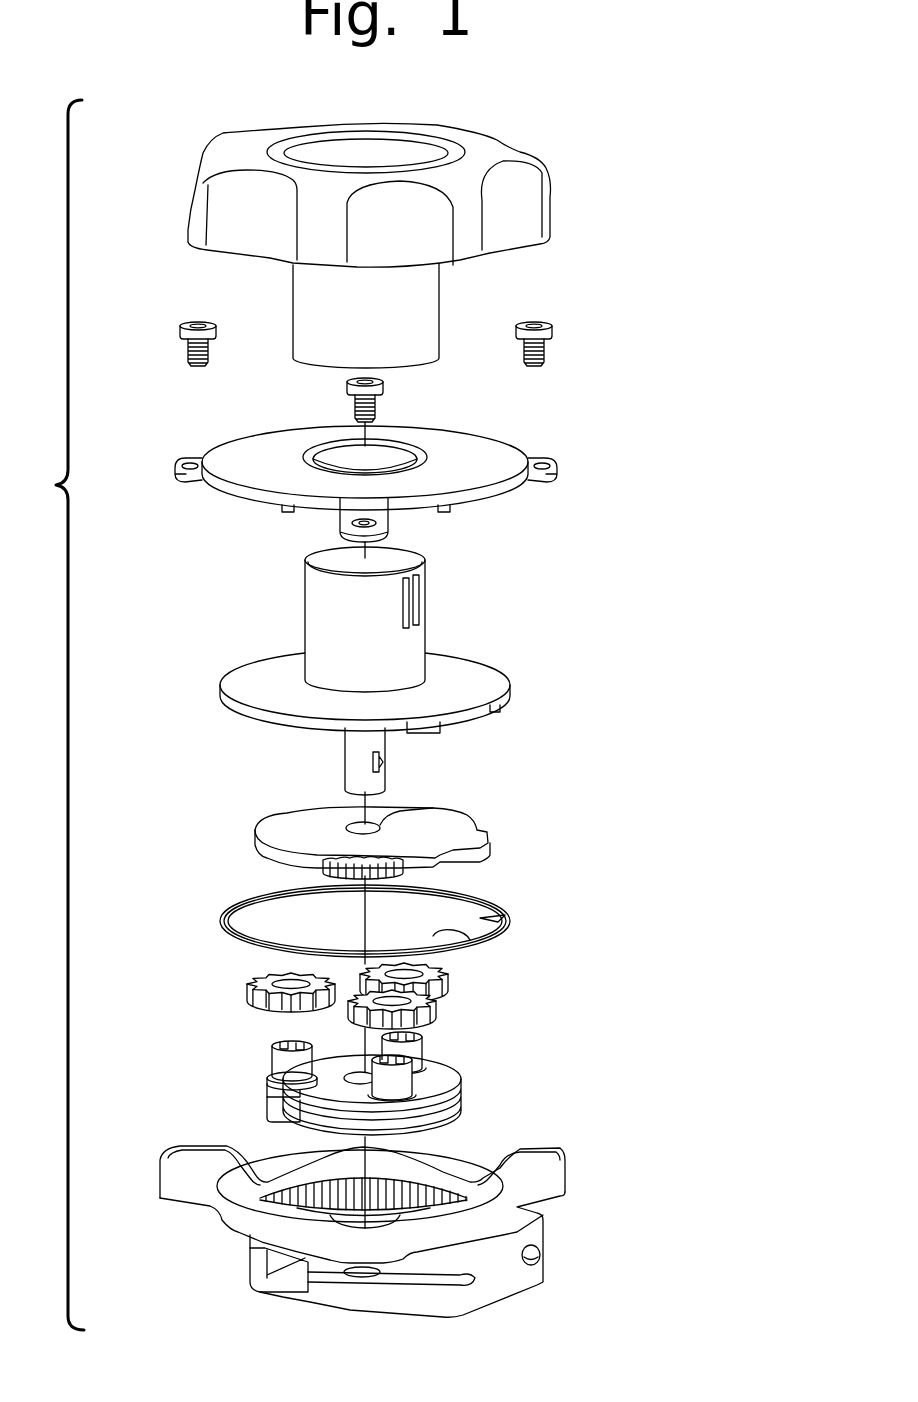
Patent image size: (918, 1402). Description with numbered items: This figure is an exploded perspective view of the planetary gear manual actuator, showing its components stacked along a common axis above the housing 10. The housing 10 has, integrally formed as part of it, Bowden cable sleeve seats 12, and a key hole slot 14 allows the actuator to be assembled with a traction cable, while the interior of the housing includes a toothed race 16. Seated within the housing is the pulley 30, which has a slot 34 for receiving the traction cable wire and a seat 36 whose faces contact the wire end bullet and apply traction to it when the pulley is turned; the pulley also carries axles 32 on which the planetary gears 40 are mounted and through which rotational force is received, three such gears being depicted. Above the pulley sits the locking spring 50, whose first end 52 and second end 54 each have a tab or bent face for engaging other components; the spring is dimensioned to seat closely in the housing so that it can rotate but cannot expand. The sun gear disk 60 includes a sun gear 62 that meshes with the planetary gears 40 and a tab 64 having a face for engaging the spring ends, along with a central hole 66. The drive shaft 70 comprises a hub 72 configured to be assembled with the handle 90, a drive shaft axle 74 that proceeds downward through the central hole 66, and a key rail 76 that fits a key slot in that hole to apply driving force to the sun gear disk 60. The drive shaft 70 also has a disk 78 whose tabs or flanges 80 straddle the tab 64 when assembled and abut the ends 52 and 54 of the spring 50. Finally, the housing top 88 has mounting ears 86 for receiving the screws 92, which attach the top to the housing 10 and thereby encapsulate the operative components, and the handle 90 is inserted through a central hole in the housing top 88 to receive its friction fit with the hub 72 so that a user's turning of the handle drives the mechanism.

The housing 10 is at (419, 1212).
The Bowden cable sleeve seats 12 is at (551, 1244).
The key hole slot 14 is at (242, 1268).
The toothed race 16 is at (458, 1194).
The pulley 30 is at (363, 1083).
The axles 32 is at (272, 1050).
The slot 34 is at (261, 1090).
The seat 36 is at (293, 1115).
The planetary gears 40 is at (448, 983).
The locking spring 50 is at (369, 921).
The first end 52 is at (496, 913).
The second end 54 is at (472, 931).
The sun gear disk 60 is at (389, 836).
The sun gear 62 is at (322, 866).
The tab 64 is at (472, 860).
The central hole 66 is at (400, 819).
The drive shaft 70 is at (359, 670).
The hub 72 is at (305, 585).
The drive shaft axle 74 is at (345, 745).
The key rail 76 is at (385, 757).
The disk 78 is at (495, 666).
The tabs or flanges 80 is at (500, 703).
The mounting ears 86 is at (557, 470).
The housing top 88 is at (488, 437).
The handle 90 is at (205, 172).
The screws 92 is at (552, 330).